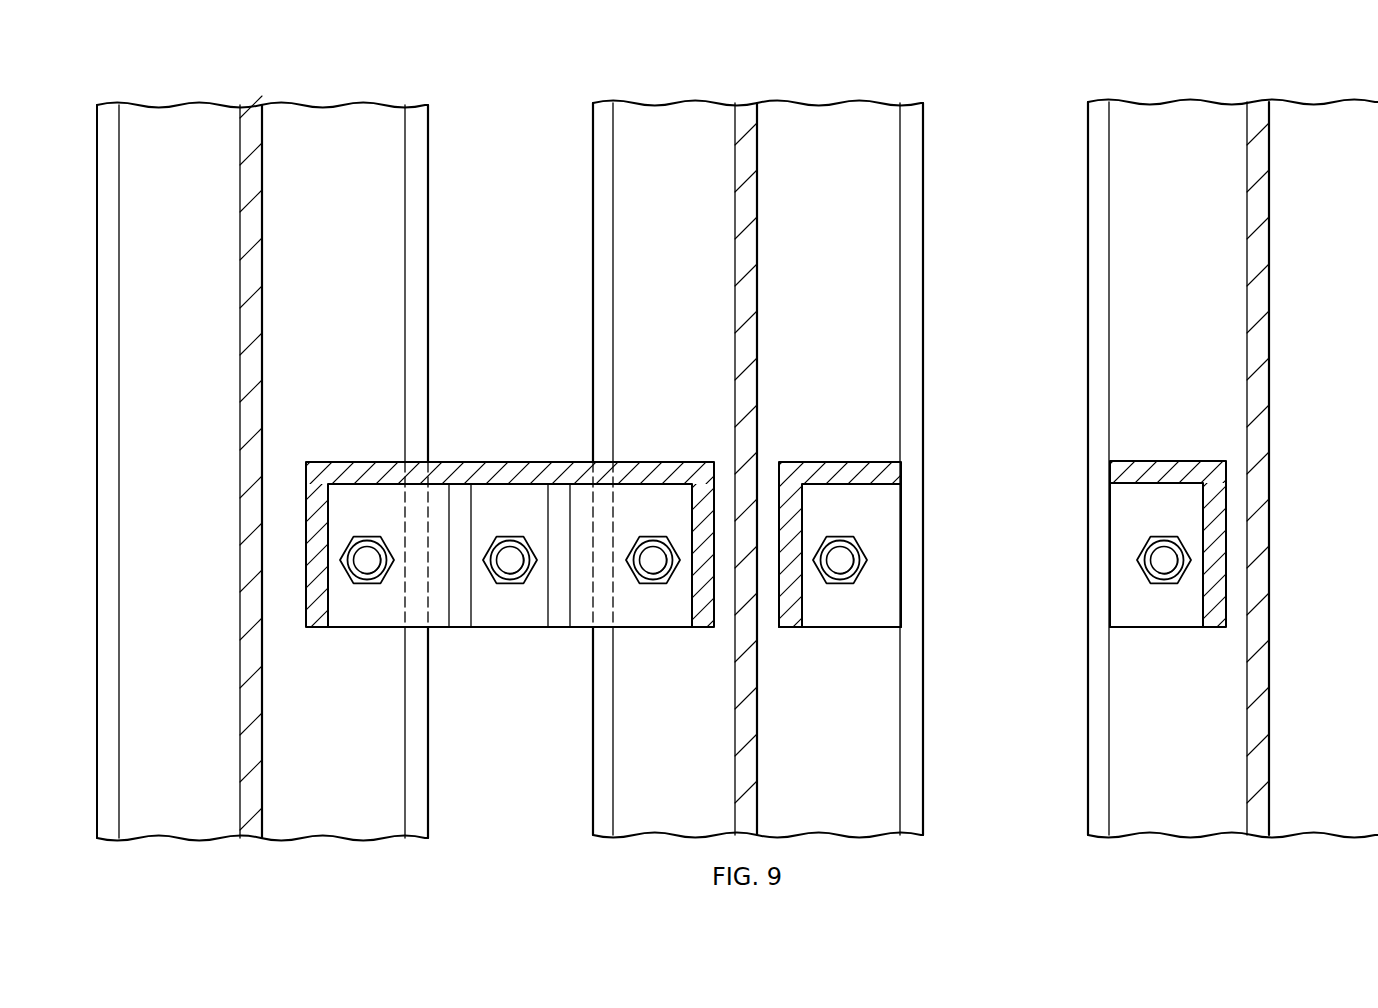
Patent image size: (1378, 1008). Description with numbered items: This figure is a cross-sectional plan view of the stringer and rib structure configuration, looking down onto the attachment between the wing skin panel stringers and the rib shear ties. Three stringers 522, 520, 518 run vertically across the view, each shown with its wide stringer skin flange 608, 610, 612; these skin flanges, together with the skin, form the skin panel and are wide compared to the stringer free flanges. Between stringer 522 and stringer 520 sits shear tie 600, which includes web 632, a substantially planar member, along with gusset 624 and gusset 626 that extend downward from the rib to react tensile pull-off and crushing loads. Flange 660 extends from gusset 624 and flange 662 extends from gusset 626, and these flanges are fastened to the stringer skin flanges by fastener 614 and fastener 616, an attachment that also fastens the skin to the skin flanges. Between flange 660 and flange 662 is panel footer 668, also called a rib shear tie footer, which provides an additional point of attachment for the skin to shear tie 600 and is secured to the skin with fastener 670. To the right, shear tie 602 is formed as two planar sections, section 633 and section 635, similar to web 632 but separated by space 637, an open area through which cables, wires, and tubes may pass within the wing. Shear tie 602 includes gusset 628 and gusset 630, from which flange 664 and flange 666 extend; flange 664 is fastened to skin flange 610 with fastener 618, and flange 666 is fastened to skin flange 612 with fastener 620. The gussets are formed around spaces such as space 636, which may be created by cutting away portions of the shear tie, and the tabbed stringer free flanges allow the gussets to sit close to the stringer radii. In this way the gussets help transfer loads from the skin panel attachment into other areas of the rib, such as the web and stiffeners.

The stringer skin flange 608 is at (183, 124).
The stringer skin flange 610 is at (678, 124).
The stringer skin flange 612 is at (1320, 124).
The stringer 522 is at (240, 287).
The stringer 520 is at (735, 310).
The stringer 518 is at (1270, 298).
The shear tie 600 is at (503, 564).
The web 632 is at (535, 463).
The flange 660 is at (367, 474).
The gusset 624 is at (328, 600).
The gusset 626 is at (673, 608).
The panel footer 668 is at (507, 610).
The flange 662 is at (645, 612).
The fastener 614 is at (367, 537).
The fastener 670 is at (505, 537).
The fastener 616 is at (650, 537).
The fastener 618 is at (843, 537).
The fastener 620 is at (1168, 537).
The shear tie 602 is at (787, 524).
The section 633 is at (818, 462).
The space 636 is at (772, 455).
The gusset 628 is at (810, 612).
The flange 664 is at (863, 612).
The space 637 is at (1020, 447).
The gusset 630 is at (1212, 548).
The section 635 is at (1187, 461).
The flange 666 is at (1140, 610).